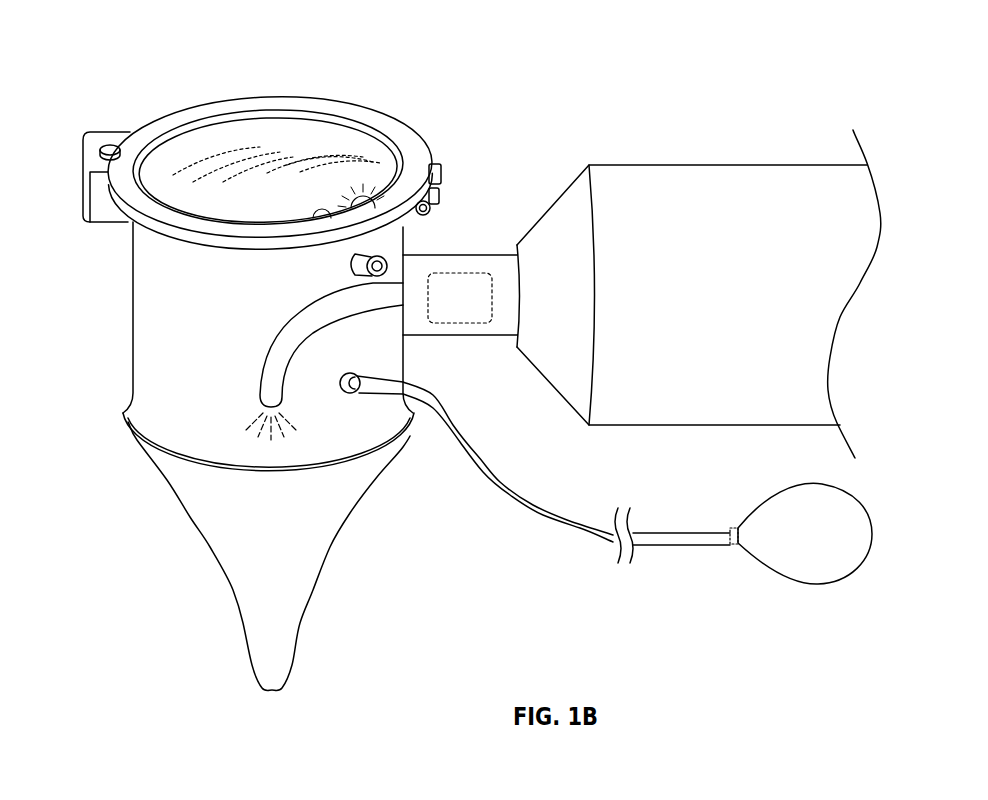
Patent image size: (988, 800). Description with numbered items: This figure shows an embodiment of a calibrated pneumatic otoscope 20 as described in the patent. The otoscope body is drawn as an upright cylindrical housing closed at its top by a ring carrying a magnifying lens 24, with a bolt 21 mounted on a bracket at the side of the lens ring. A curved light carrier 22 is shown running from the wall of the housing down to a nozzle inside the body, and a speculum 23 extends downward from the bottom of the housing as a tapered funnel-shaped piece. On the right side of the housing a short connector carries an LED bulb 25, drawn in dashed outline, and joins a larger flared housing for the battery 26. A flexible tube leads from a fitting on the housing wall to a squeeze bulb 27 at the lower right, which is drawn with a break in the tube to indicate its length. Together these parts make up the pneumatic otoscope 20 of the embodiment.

The calibrated pneumatic otoscope 20 is at (513, 85).
The bolt 21 is at (112, 149).
The light carrier 22 is at (277, 362).
The speculum 23 is at (277, 553).
The magnifying lens 24 is at (277, 148).
The LED bulb 25 is at (458, 292).
The battery 26 is at (718, 252).
The squeeze bulb 27 is at (800, 521).